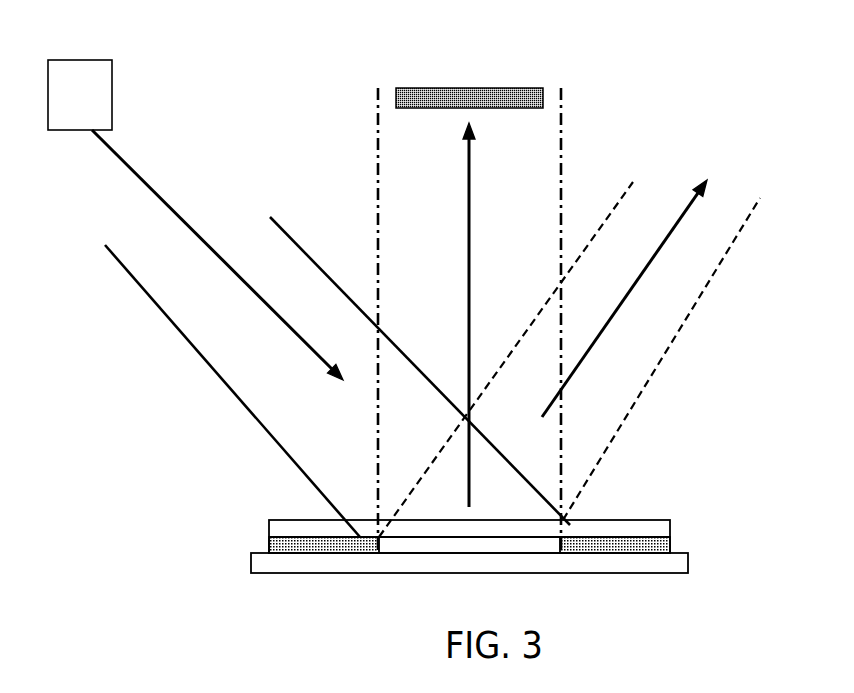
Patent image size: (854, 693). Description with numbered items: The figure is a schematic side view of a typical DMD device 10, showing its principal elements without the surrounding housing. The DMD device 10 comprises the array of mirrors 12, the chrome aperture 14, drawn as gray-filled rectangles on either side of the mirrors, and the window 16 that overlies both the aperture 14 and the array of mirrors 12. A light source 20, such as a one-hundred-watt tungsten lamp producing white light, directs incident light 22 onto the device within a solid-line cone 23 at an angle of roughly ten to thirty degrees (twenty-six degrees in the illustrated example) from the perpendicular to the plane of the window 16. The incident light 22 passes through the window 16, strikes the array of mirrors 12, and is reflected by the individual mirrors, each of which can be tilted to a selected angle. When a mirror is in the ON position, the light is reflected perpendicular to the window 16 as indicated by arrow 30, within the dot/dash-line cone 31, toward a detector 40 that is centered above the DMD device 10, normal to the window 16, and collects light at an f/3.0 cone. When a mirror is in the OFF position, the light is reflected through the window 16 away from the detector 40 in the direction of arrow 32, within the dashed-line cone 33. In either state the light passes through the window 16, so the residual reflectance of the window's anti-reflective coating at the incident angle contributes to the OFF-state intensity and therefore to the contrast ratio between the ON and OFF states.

The DMD device 10 is at (470, 533).
The array of mirrors 12 is at (251, 565).
The chrome aperture 14 is at (269, 542).
The window 16 is at (270, 520).
The light source 20 is at (94, 106).
The incident light 22 is at (217, 255).
The solid-line cone 23 is at (178, 328).
The arrow indicating ON-state reflected light 30 is at (456, 315).
The dot/dash-line cone 31 is at (378, 165).
The arrow indicating OFF-state reflected light 32 is at (635, 282).
The dashed-line cone 33 is at (605, 217).
The detector 40 is at (472, 87).